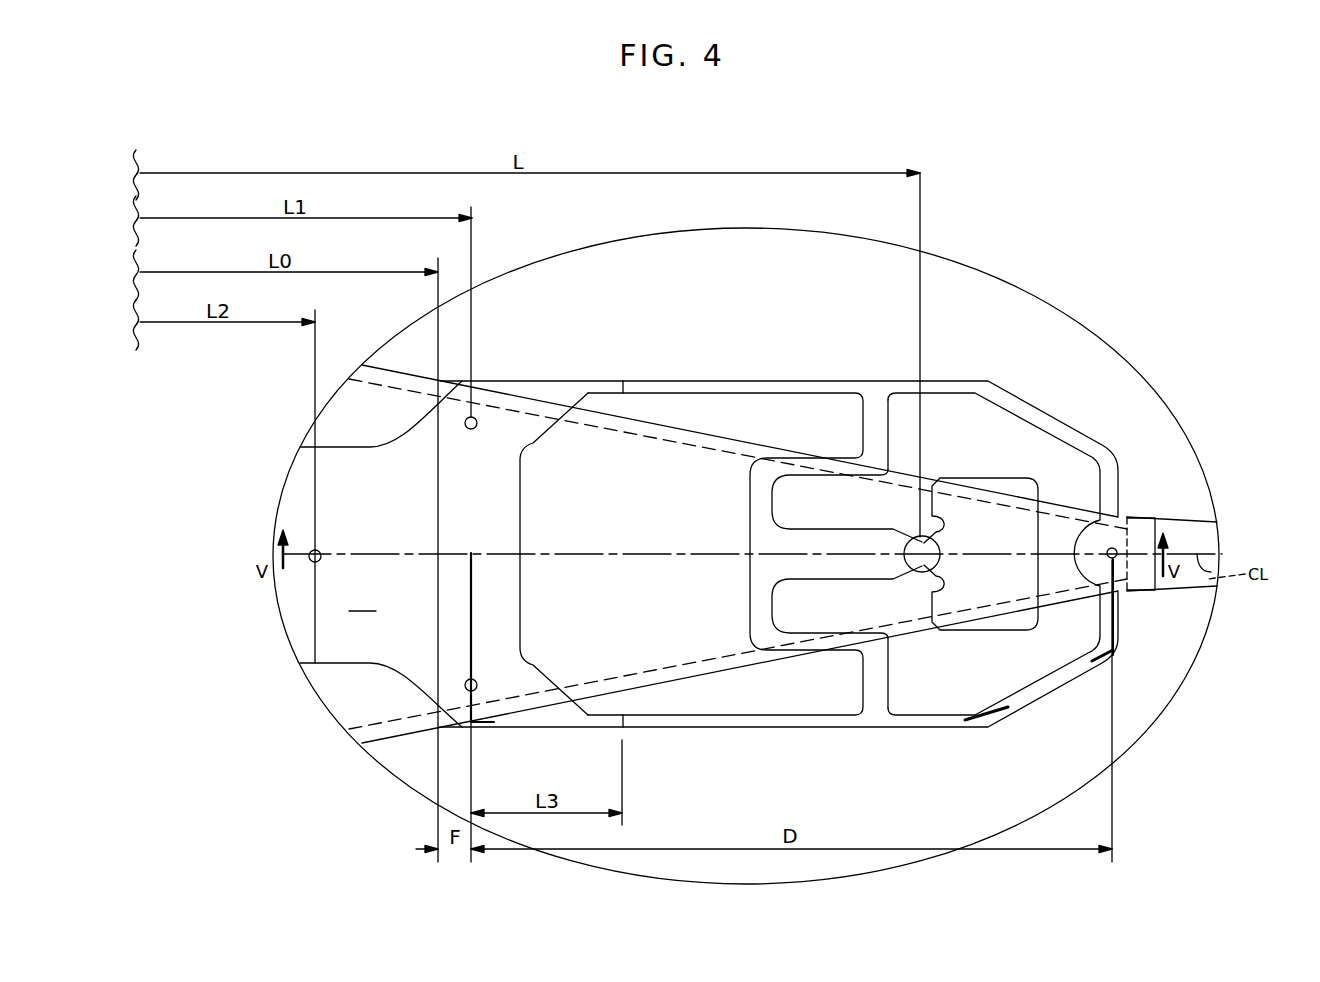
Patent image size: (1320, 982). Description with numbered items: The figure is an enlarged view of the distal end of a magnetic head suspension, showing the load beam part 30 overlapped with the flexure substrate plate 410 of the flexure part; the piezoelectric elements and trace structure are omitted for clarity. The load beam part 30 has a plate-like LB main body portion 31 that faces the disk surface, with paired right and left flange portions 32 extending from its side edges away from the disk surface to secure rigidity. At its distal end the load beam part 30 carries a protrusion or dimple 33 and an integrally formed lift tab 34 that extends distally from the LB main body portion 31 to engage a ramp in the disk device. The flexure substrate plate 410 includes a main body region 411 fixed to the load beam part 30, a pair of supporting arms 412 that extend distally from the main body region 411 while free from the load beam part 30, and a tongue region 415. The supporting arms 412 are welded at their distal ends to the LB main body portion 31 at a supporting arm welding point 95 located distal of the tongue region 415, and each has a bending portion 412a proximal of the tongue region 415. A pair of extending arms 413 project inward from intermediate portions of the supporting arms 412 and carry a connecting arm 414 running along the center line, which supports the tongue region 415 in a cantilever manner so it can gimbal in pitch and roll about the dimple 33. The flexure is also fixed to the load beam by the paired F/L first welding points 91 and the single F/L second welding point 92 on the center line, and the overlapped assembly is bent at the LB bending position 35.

The load beam part 30 is at (364, 762).
The LB main body portion 31 is at (348, 710).
The flange portions 32 is at (400, 380).
The protrusion (dimple) 33 is at (922, 573).
The lift tab 34 is at (1200, 527).
The LB bending position 35 is at (438, 503).
The F/L first welding points 91 is at (474, 418).
The F/L second welding point 92 is at (318, 550).
The supporting arm welding point 95 is at (1114, 548).
The flexure substrate plate 410 is at (305, 640).
The main body region 411 is at (362, 600).
The supporting arms 412 is at (752, 381).
The bending portion 412a is at (624, 389).
The extending arms 413 is at (861, 432).
The connecting arm 414 is at (834, 577).
The tongue region 415 is at (980, 522).